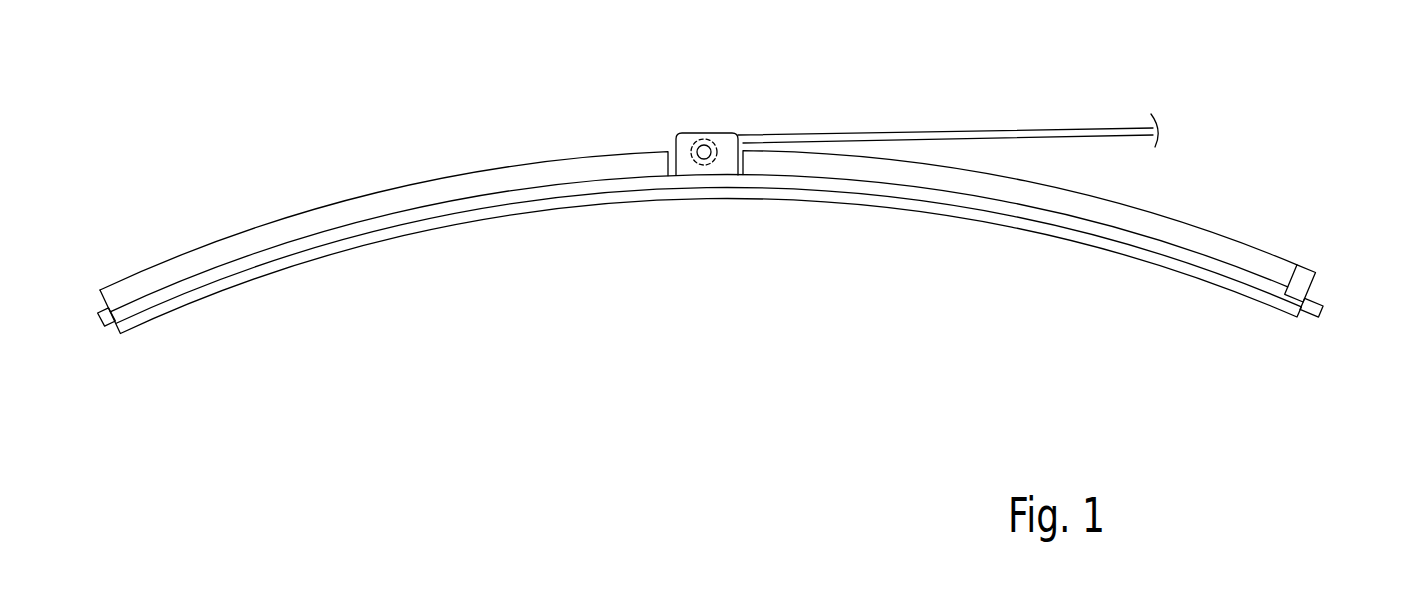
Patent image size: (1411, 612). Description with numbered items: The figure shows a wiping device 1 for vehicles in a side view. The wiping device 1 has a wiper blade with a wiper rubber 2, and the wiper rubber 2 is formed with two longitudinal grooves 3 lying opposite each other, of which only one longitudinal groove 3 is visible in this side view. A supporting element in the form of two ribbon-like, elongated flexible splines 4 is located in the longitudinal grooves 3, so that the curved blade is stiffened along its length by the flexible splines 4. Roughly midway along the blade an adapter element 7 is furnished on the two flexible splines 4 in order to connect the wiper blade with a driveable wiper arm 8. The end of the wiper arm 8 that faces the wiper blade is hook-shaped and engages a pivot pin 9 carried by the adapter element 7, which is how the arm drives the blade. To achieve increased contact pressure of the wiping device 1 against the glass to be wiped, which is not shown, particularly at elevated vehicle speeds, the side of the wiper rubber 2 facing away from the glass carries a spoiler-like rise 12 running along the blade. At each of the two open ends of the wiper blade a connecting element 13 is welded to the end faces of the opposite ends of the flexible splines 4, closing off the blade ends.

The wiping device 1 is at (508, 136).
The wiper rubber 2 is at (470, 212).
The longitudinal groove 3 is at (1307, 263).
The flexible spline 4 is at (1182, 250).
The adapter element 7 is at (685, 140).
The wiper arm 8 is at (922, 135).
The pivot pin 9 is at (708, 143).
The spoiler-like rise 12 is at (393, 202).
The connecting element 13 is at (96, 316).